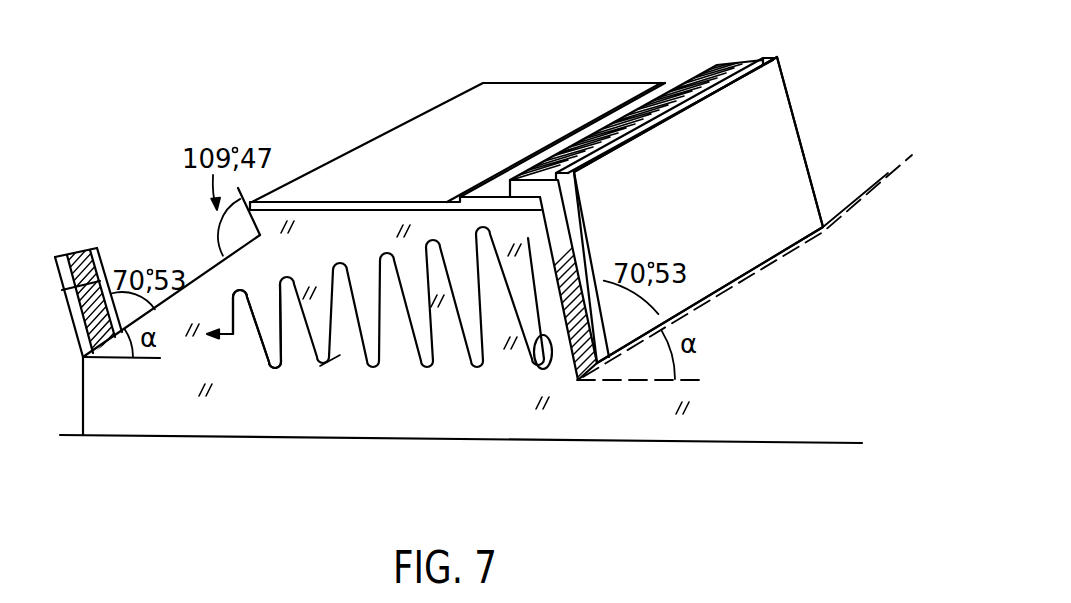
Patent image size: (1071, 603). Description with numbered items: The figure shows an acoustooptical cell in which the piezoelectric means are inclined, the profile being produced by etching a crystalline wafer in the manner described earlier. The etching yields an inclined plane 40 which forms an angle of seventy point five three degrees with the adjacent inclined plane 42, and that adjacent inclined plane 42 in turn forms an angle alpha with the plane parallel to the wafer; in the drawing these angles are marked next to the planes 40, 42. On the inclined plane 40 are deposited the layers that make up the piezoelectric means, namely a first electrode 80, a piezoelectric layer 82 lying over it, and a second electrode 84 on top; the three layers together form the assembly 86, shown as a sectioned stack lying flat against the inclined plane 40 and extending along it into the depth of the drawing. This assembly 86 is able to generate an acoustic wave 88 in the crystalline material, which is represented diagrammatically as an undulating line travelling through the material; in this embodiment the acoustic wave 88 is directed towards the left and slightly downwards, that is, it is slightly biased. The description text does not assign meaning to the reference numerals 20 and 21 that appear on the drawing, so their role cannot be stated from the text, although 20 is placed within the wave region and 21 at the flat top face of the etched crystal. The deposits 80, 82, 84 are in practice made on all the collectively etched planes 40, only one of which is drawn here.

The spring 20 is at (372, 364).
The top plate 21 is at (313, 200).
The inclined plane 40 is at (103, 282).
The adjacent inclined plane 42 is at (203, 275).
The first electrode 80 is at (578, 378).
The piezoelectric layer 82 is at (598, 365).
The second electrode 84 is at (607, 332).
The assembly 86 is at (797, 86).
The acoustic wave 88 is at (262, 358).